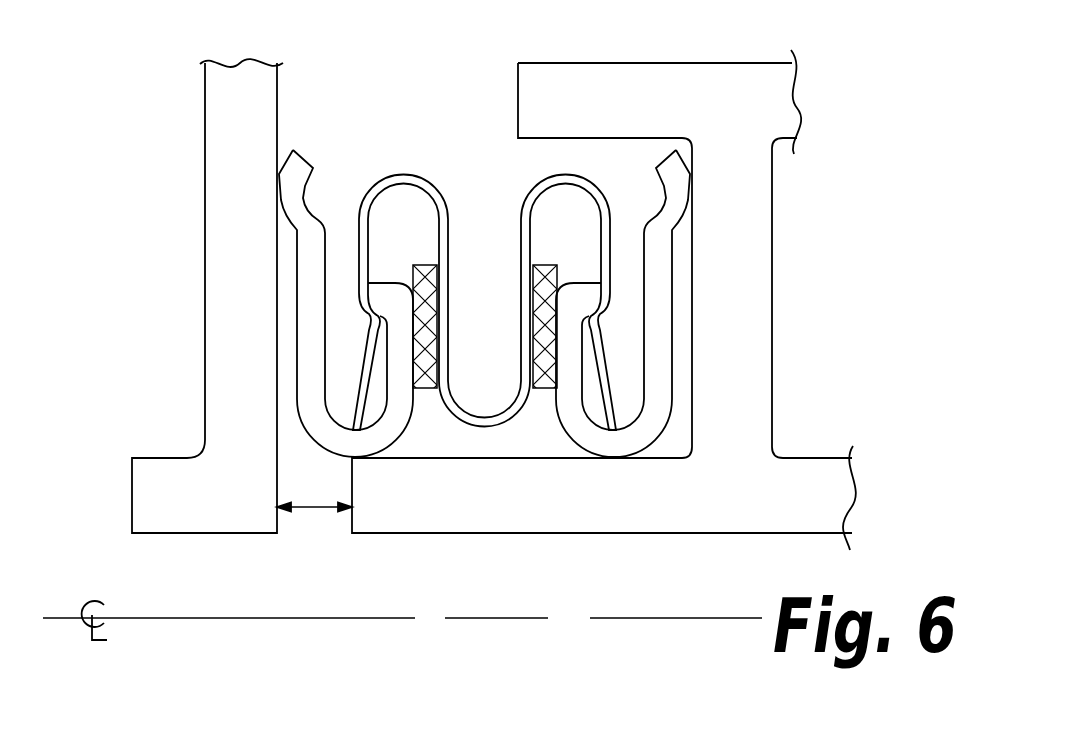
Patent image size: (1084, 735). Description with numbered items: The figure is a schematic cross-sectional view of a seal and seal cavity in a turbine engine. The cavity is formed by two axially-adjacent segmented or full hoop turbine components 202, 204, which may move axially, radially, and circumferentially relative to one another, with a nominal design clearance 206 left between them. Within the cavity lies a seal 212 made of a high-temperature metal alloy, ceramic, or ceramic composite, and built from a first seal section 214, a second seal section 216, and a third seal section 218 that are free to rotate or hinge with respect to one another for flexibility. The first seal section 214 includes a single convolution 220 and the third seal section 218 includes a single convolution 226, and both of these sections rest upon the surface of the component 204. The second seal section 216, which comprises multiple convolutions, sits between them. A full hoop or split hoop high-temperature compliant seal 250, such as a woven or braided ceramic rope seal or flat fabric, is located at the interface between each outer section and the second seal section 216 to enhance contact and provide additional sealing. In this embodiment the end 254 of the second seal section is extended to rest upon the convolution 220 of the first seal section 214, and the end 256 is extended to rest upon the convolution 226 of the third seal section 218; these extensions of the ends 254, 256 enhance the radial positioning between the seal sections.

The turbine component 202 is at (215, 533).
The turbine component 204 is at (695, 533).
The nominal design clearance 206 is at (313, 507).
The seal 212 is at (489, 258).
The first seal section 214 is at (290, 295).
The second seal section 216 is at (383, 165).
The third seal section 218 is at (680, 286).
The convolution 220 is at (322, 457).
The convolution 226 is at (646, 451).
The compliant seal 250 is at (413, 277).
The end of the second seal section 254 is at (353, 427).
The end of the second seal section 256 is at (610, 428).